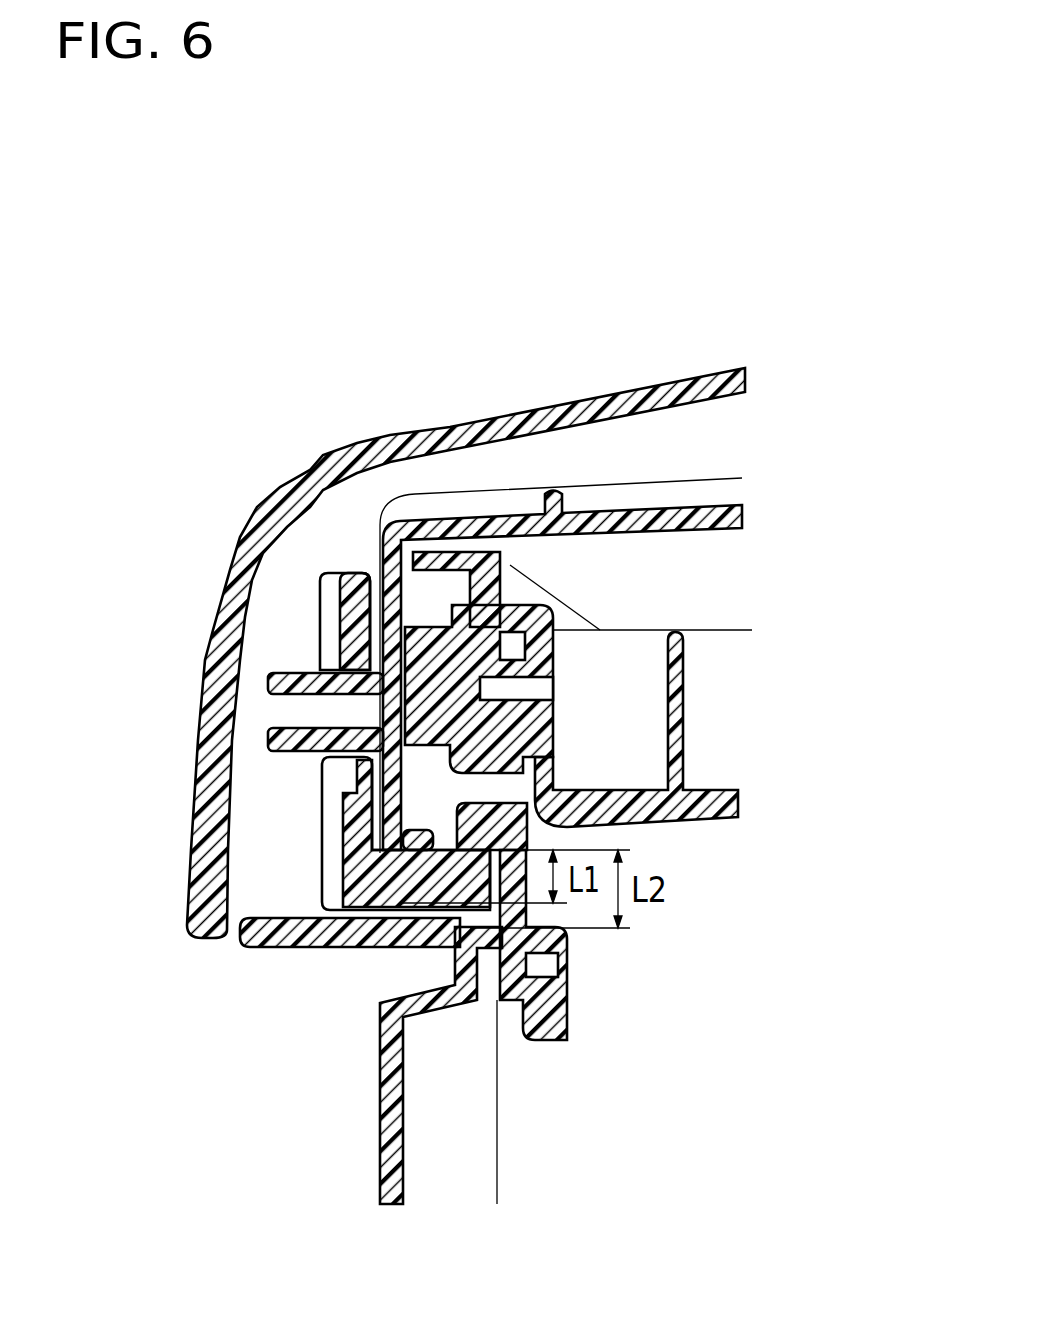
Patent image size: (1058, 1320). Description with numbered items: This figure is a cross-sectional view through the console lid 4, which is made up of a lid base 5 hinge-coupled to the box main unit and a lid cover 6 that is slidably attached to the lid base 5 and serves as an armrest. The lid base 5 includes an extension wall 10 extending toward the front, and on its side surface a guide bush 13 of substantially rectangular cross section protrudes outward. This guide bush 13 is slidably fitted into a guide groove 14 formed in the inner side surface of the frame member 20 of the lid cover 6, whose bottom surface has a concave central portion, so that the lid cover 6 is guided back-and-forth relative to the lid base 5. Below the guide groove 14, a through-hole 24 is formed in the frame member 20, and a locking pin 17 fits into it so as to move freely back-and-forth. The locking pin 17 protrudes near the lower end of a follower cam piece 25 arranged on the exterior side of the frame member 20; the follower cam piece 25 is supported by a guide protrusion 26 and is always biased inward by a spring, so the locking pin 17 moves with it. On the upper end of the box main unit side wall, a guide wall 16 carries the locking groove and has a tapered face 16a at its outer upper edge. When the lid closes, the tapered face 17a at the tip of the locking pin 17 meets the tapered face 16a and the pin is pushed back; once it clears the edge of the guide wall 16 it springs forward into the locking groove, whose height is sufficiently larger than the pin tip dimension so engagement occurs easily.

The console lid 4 is at (755, 235).
The lid base 5 is at (710, 790).
The lid cover 6 is at (727, 360).
The extension wall 10 is at (686, 828).
The guide bush 13 is at (405, 645).
The guide groove 14 is at (438, 652).
The guide wall 16 is at (470, 906).
The tapered face 16a is at (478, 816).
The locking pin 17 is at (397, 945).
The tapered face 17a is at (453, 930).
The frame member 20 is at (630, 505).
The through-hole 24 is at (405, 874).
The follower cam piece 25 is at (320, 612).
The guide protrusion 26 is at (268, 687).